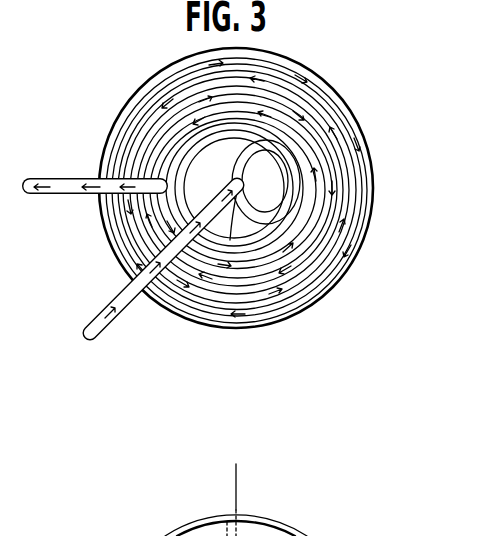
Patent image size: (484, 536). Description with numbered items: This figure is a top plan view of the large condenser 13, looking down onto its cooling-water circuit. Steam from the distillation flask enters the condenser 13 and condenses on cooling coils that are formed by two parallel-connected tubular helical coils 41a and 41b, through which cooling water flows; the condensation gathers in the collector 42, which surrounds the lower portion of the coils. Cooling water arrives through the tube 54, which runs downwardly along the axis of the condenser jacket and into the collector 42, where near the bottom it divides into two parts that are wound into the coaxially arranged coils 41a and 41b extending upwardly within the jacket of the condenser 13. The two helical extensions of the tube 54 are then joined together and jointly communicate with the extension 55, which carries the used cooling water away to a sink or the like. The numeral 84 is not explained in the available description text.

The large condenser 13 is at (99, 150).
The collector 42 is at (308, 92).
The helical coil 41a is at (226, 192).
The helical coil 41b is at (327, 186).
The tube 54 is at (93, 321).
The extension 55 is at (55, 195).
The cover 84 is at (285, 530).